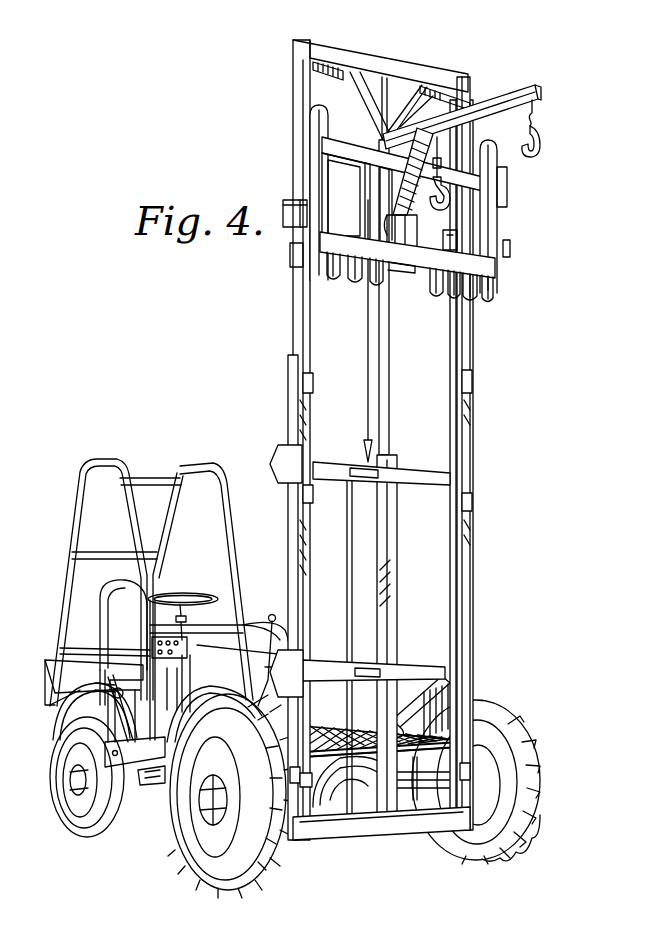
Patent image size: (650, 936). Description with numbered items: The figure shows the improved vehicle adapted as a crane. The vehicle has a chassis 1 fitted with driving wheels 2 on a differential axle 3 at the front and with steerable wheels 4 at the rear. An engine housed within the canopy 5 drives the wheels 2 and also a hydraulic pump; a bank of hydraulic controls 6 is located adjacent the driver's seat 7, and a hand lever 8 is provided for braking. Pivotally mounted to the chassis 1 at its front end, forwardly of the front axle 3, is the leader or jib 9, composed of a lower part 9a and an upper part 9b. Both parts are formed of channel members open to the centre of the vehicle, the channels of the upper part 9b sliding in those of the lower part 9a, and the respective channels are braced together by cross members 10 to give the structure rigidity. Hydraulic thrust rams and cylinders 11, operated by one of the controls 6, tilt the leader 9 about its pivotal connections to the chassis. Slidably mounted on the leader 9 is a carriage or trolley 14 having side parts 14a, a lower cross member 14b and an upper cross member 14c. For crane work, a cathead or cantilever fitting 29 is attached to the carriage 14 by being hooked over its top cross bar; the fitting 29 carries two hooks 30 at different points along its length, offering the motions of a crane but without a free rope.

The chassis 1 is at (159, 803).
The driving wheels 2 is at (240, 880).
The differential axle 3 is at (352, 800).
The steerable wheels 4 is at (60, 805).
The canopy 5 is at (232, 630).
The hydraulic controls 6 is at (152, 640).
The driver's seat 7 is at (125, 665).
The hand lever 8 is at (140, 708).
The leader or jib 9 is at (417, 440).
The lower part of leader 9a is at (470, 563).
The upper part of leader 9b is at (474, 323).
The cross members 10 is at (335, 52).
The hydraulic thrust rams and cylinders 11 is at (396, 715).
The carriage or trolley 14 is at (401, 211).
The side parts 14a is at (298, 157).
The lower cross member 14b is at (320, 286).
The upper cross member 14c is at (446, 195).
The cathead or cantilever fitting 29 is at (505, 90).
The hooks 30 is at (545, 142).